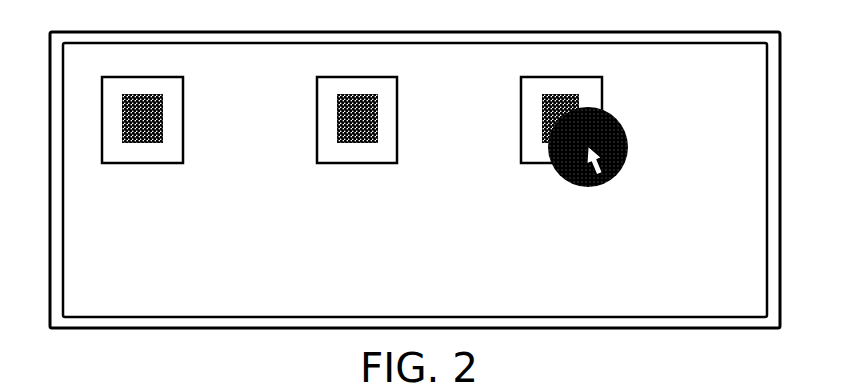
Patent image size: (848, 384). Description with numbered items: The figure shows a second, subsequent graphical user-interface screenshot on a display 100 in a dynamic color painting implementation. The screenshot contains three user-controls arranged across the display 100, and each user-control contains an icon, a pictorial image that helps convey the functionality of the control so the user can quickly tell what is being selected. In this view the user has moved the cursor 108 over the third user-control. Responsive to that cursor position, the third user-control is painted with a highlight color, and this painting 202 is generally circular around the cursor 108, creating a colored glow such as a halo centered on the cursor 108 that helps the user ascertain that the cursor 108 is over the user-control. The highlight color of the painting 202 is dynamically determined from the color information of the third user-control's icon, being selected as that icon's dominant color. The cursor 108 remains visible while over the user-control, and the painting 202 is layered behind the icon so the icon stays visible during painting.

The display 100 is at (650, 32).
The painting 202 is at (607, 118).
The cursor 108 is at (593, 186).